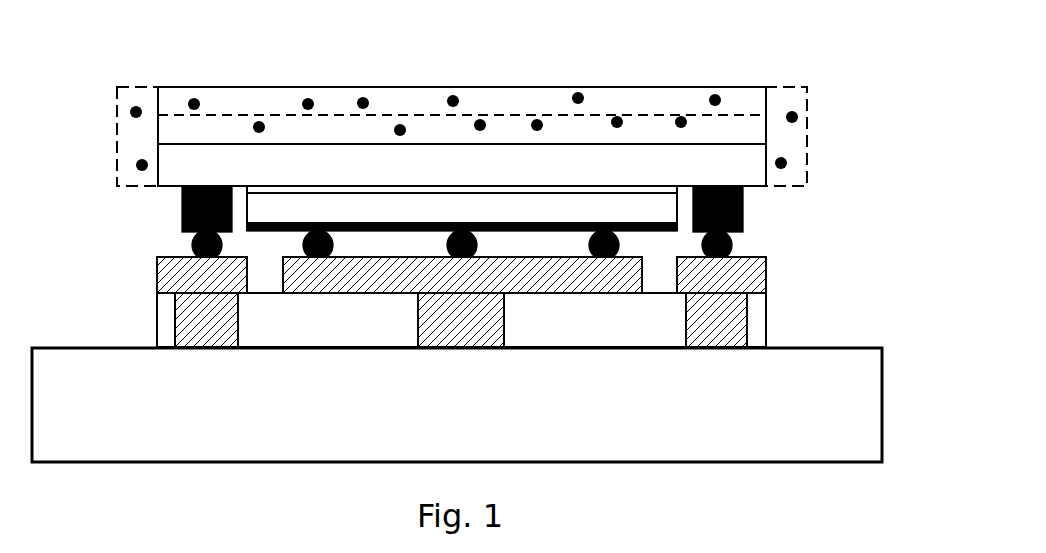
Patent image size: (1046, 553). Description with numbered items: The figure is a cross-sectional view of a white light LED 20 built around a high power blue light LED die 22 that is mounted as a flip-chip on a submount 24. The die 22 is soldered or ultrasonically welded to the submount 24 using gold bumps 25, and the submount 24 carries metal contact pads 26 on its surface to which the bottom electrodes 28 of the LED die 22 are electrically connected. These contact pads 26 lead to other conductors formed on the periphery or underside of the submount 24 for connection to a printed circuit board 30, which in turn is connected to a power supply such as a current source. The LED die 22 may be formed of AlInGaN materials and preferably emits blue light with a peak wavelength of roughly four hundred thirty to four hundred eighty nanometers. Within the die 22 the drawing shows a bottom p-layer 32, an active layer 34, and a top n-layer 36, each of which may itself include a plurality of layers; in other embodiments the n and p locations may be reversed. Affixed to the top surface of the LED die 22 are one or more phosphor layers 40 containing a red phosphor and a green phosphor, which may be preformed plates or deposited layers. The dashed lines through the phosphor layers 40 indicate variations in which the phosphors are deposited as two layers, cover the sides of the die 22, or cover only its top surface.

The white light LED 20 is at (97, 73).
The LED die 22 is at (838, 140).
The submount 24 is at (767, 323).
The gold bumps 25 is at (618, 239).
The metal contact pads 26 is at (766, 270).
The bottom electrodes 28 is at (693, 192).
The printed circuit board 30 is at (457, 405).
The bottom p-layer 32 is at (310, 205).
The active layer 34 is at (375, 193).
The top n-layer 36 is at (163, 188).
The phosphor layers 40 is at (713, 85).